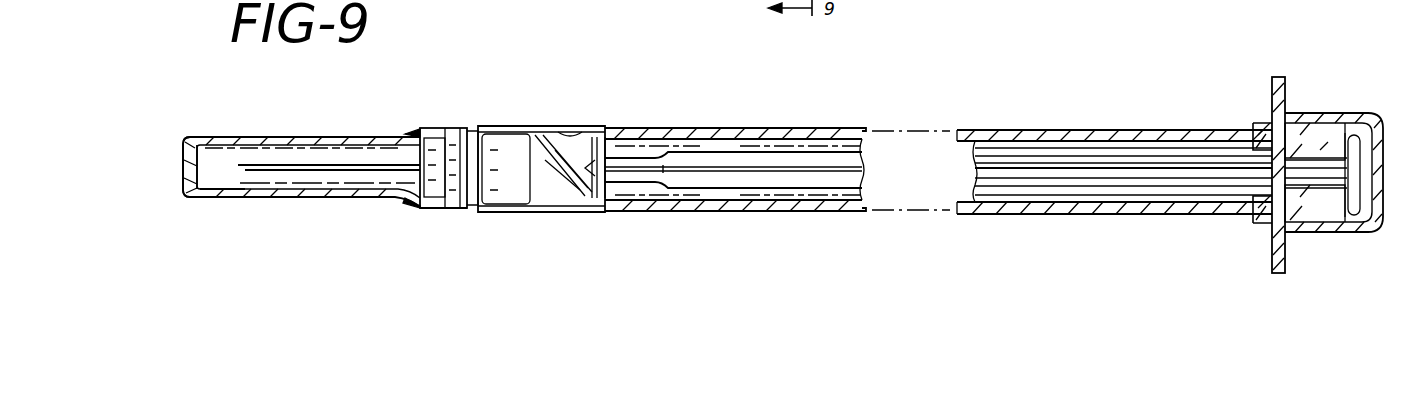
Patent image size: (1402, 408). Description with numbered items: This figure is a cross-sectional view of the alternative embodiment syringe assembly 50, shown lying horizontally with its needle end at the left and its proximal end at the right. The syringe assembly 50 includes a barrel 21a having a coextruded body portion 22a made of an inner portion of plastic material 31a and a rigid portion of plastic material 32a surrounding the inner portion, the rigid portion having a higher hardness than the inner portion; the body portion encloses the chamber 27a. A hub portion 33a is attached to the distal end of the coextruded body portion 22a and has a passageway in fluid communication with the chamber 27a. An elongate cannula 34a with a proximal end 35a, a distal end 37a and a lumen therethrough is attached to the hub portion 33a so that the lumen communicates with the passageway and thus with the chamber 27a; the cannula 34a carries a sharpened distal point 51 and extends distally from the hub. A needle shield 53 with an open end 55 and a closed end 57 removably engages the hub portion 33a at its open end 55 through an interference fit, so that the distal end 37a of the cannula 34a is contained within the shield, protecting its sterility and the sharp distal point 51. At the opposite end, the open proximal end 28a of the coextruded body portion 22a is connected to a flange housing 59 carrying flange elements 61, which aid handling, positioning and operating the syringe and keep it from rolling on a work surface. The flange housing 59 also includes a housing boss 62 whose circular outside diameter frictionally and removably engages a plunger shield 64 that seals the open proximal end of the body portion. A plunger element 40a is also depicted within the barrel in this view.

The barrel 21a is at (787, 129).
The coextruded body portion 22a is at (748, 212).
The chamber 27a is at (558, 175).
The open proximal end 28a is at (1208, 215).
The inner portion of plastic material 31a is at (573, 147).
The rigid portion of plastic material 32a is at (543, 213).
The hub portion 33a is at (503, 147).
The cannula 34a is at (343, 172).
The proximal end 35a is at (400, 158).
The distal end 37a is at (278, 170).
The plunger rod 40a is at (1028, 160).
The syringe assembly 50 is at (938, 166).
The sharpened distal point 51 is at (237, 197).
The needle shield 53 is at (317, 137).
The open end 55 is at (442, 209).
The closed end 57 is at (192, 137).
The flange housing 59 is at (1272, 124).
The flange elements 61 is at (1288, 85).
The housing boss 62 is at (1310, 134).
The plunger shield 64 is at (1352, 233).